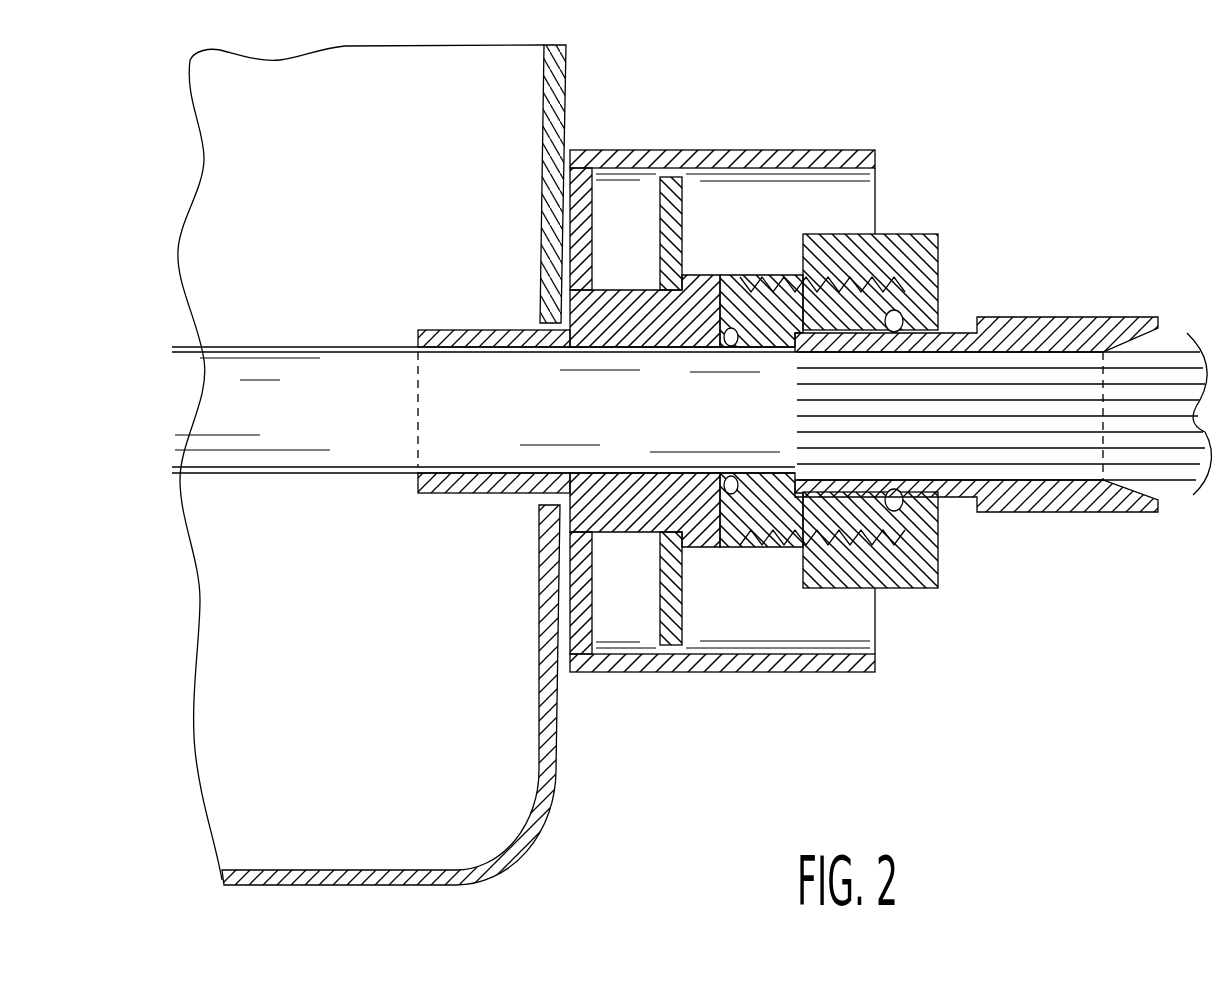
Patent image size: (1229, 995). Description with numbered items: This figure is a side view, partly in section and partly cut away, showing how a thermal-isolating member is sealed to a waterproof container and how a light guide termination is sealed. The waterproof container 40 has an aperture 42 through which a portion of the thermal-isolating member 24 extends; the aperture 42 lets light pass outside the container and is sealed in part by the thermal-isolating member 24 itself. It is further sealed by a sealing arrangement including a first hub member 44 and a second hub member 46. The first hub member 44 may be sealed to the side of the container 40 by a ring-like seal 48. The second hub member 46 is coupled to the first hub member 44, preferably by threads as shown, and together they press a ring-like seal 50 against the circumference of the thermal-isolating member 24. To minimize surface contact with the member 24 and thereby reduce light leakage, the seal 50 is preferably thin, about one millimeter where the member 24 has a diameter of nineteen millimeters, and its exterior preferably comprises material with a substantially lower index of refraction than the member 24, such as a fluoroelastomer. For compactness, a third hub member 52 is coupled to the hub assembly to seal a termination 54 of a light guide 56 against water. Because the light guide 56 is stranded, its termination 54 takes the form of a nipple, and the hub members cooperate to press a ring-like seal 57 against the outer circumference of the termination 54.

The thermal-isolating member 24 is at (348, 365).
The waterproof container 40 is at (555, 95).
The aperture 42 is at (548, 325).
The first hub member 44 is at (650, 670).
The second hub member 46 is at (693, 537).
The ring-like seal 48 is at (572, 640).
The ring-like seal 50 is at (723, 517).
The third hub member 52 is at (915, 572).
The termination 54 is at (1075, 316).
The light guide 56 is at (1168, 470).
The ring-like seal 57 is at (932, 303).